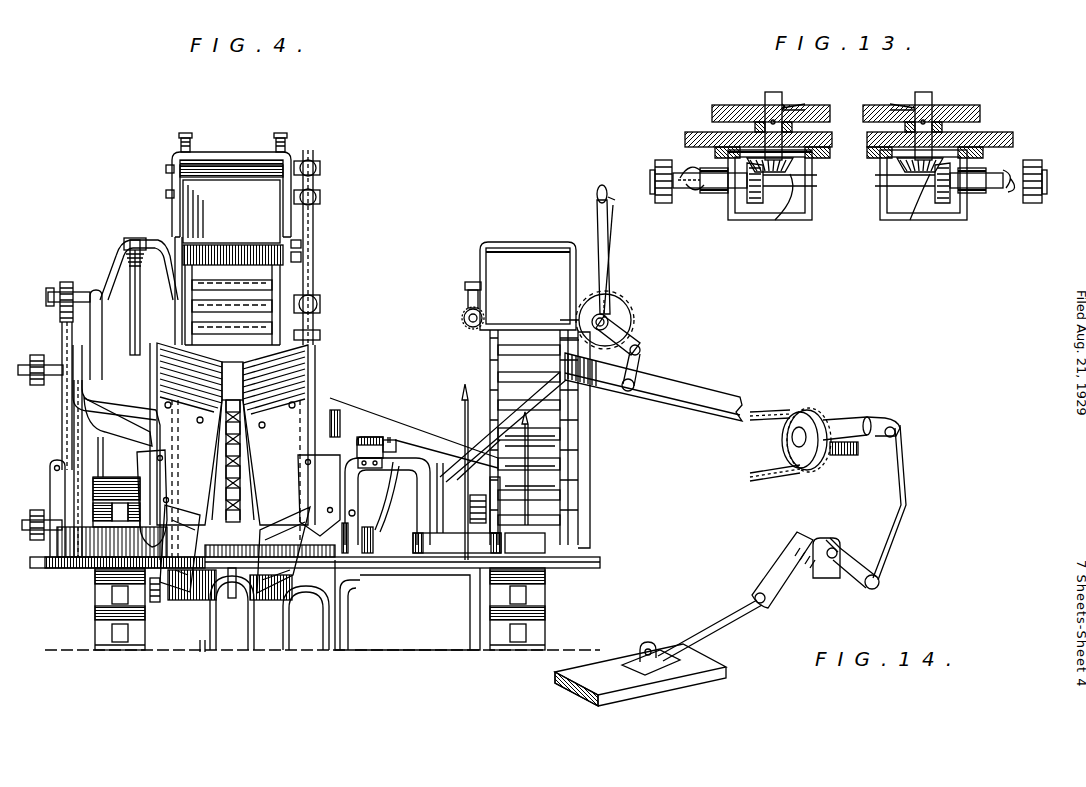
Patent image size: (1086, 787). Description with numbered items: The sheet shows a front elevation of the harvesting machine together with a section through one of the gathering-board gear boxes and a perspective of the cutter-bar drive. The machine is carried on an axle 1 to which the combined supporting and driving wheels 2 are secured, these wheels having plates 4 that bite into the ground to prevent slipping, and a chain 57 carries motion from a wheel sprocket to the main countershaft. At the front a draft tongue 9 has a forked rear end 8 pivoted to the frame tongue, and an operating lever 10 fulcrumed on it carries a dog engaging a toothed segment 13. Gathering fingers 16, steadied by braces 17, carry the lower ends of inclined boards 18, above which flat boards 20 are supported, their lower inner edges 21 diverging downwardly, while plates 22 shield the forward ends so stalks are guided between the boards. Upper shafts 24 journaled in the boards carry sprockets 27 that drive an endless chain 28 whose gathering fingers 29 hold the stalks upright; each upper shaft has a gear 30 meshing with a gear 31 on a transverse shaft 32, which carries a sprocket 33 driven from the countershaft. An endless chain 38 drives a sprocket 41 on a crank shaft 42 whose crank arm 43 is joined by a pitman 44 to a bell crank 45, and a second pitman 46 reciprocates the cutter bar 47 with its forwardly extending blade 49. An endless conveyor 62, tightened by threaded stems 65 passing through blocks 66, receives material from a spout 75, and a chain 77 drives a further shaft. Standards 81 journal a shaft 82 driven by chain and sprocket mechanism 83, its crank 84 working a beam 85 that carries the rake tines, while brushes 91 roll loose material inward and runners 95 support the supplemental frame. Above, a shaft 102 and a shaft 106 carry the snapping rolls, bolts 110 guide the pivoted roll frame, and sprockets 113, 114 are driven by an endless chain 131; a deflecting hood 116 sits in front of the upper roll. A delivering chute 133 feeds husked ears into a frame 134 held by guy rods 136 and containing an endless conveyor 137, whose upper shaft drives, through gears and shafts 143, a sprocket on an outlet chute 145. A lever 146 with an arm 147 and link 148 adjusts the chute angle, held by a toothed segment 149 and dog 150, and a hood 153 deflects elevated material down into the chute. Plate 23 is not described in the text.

In FIG. 4, the axle 1 is at (42, 570).
In FIG. 4, the combined supporting and driving wheels 2 is at (100, 586).
In FIG. 4, the plates 4 is at (100, 642).
In FIG. 4, the forked rear end 8 is at (457, 543).
In FIG. 4, the draft tongue 9 is at (28, 372).
In FIG. 4, the operating lever 10 is at (462, 420).
In FIG. 4, the toothed segment 13 is at (470, 512).
In FIG. 4, the gathering fingers 16 is at (193, 592).
In FIG. 4, the braces 17 is at (350, 572).
In FIG. 13, the boards 18 is at (685, 140).
In FIG. 4, the flat boards 20 is at (28, 526).
In FIG. 4, the inner edges 21 is at (290, 380).
In FIG. 4, the plates 22 is at (178, 518).
In FIG. 4, the side plate 23 is at (137, 462).
In FIG. 13, the upper shafts 24 is at (768, 102).
In FIG. 13, the sprockets 27 is at (712, 114).
In FIG. 4, the endless chain 28 is at (244, 414).
In FIG. 13, the endless chain 28 is at (862, 112).
In FIG. 4, the gathering fingers 29 is at (245, 479).
In FIG. 13, the gear 30 is at (812, 168).
In FIG. 13, the gear 31 is at (775, 220).
In FIG. 13, the transverse shaft 32 is at (716, 184).
In FIG. 13, the sprocket 33 is at (655, 174).
In FIG. 14, the endless chain 38 is at (778, 410).
In FIG. 14, the sprocket 41 is at (790, 470).
In FIG. 4, the crank shaft 42 is at (378, 437).
In FIG. 14, the crank shaft 42 is at (804, 430).
In FIG. 4, the crank arm 43 is at (394, 448).
In FIG. 14, the crank arm 43 is at (888, 420).
In FIG. 4, the pitman 44 is at (400, 470).
In FIG. 14, the pitman 44 is at (912, 500).
In FIG. 4, the bell crank 45 is at (380, 522).
In FIG. 14, the bell crank 45 is at (850, 556).
In FIG. 4, the pitman 46 is at (319, 495).
In FIG. 14, the pitman 46 is at (748, 612).
In FIG. 14, the cutter bar 47 is at (648, 642).
In FIG. 4, the blade 49 is at (230, 598).
In FIG. 4, the chain 57 is at (156, 602).
In FIG. 4, the endless conveyor 62 is at (283, 312).
In FIG. 4, the threaded stems 65 is at (302, 247).
In FIG. 4, the blocks 66 is at (302, 262).
In FIG. 4, the spout 75 is at (112, 452).
In FIG. 4, the chain 77 is at (50, 464).
In FIG. 4, the standards 81 is at (102, 305).
In FIG. 4, the shaft 82 is at (46, 297).
In FIG. 4, the chain and sprocket mechanism 83 is at (60, 312).
In FIG. 4, the crank 84 is at (116, 262).
In FIG. 4, the beam 85 is at (138, 248).
In FIG. 4, the brush 91 is at (236, 650).
In FIG. 4, the runners 95 is at (200, 652).
In FIG. 4, the shaft 102 is at (166, 194).
In FIG. 4, the shaft 106 is at (166, 170).
In FIG. 4, the bolts 110 is at (186, 136).
In FIG. 4, the sprocket 113 is at (310, 162).
In FIG. 4, the sprocket 114 is at (314, 198).
In FIG. 4, the deflecting hood 116 is at (237, 147).
In FIG. 4, the endless chain 131 is at (315, 228).
In FIG. 4, the delivering chute 133 is at (406, 428).
In FIG. 4, the frame 134 is at (578, 438).
In FIG. 4, the guy rods 136 is at (578, 400).
In FIG. 4, the endless conveyor 137 is at (568, 452).
In FIG. 4, the gears and shafts 143 is at (462, 318).
In FIG. 4, the outlet chute 145 is at (696, 386).
In FIG. 4, the lever 146 is at (612, 262).
In FIG. 4, the arm 147 is at (640, 335).
In FIG. 4, the link 148 is at (640, 372).
In FIG. 4, the toothed segment 149 is at (630, 302).
In FIG. 4, the dog 150 is at (612, 300).
In FIG. 4, the hood 153 is at (528, 286).